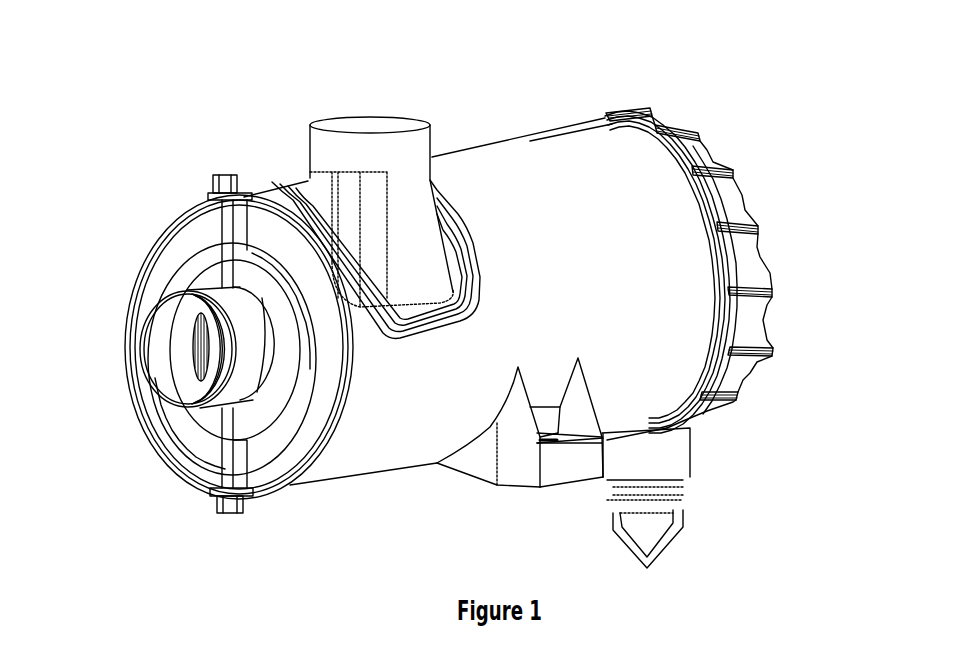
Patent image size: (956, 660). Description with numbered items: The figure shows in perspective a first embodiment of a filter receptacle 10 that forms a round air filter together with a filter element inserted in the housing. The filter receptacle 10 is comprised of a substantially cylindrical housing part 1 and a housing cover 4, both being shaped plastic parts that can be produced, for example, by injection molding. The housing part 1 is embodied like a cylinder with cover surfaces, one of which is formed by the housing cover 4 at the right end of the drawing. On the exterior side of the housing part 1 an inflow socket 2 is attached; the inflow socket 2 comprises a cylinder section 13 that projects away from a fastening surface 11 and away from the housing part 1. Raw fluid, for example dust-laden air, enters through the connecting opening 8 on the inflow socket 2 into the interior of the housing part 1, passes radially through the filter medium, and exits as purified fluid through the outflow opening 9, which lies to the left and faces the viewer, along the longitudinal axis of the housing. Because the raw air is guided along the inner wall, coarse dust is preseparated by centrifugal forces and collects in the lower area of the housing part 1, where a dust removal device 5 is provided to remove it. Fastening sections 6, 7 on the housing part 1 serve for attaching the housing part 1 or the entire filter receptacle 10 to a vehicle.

The filter receptacle 10 is at (101, 130).
The housing part 1 is at (378, 462).
The inflow socket 2 is at (440, 130).
The housing cover 4 is at (735, 205).
The dust removal device 5 is at (682, 463).
The fastening section 6 is at (510, 477).
The fastening section 7 is at (226, 174).
The connecting opening 8 is at (368, 132).
The outflow opening 9 is at (163, 353).
The fastening surface 11 is at (461, 320).
The cylinder section 13 is at (310, 140).